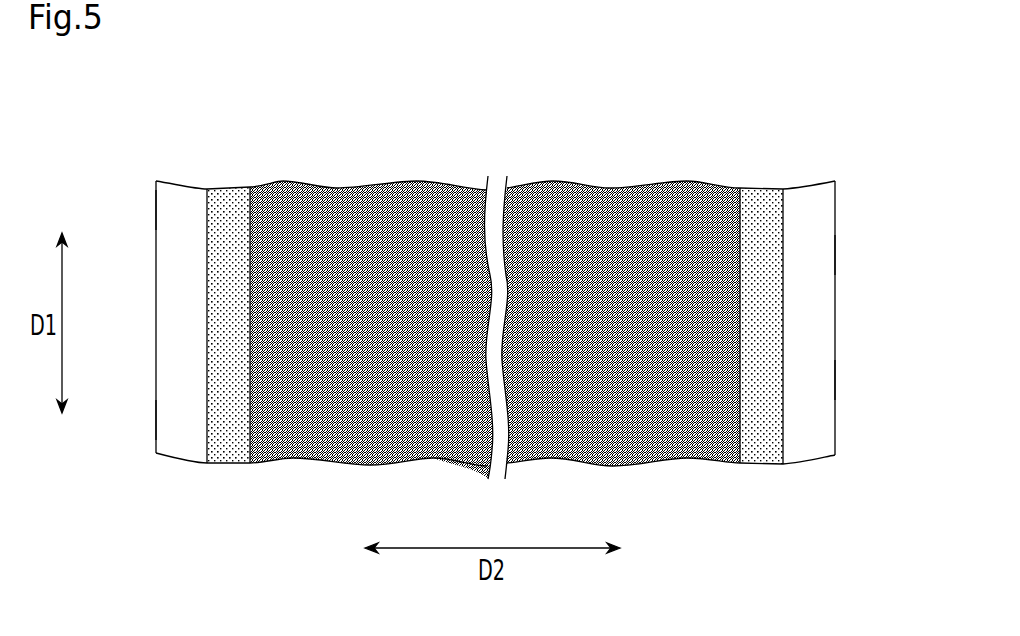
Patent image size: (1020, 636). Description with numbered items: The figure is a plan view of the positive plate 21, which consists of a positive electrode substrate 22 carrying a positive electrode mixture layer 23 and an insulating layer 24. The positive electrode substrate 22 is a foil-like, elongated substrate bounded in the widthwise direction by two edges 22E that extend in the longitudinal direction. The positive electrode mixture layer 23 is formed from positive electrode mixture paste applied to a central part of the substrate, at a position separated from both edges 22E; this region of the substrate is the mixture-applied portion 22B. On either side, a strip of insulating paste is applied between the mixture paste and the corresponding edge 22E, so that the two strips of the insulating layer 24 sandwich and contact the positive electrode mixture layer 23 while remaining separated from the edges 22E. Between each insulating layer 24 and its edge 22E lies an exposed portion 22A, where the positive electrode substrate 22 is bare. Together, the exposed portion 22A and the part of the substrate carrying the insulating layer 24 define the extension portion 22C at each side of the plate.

The positive plate 21 is at (656, 486).
The positive electrode substrate 22 is at (178, 447).
The exposed portion 22A is at (172, 204).
The mixture-applied portion 22B is at (735, 162).
The extension portion 22C is at (250, 162).
The edge 22E is at (157, 413).
The positive electrode mixture layer 23 is at (342, 443).
The insulating layer 24 is at (232, 443).